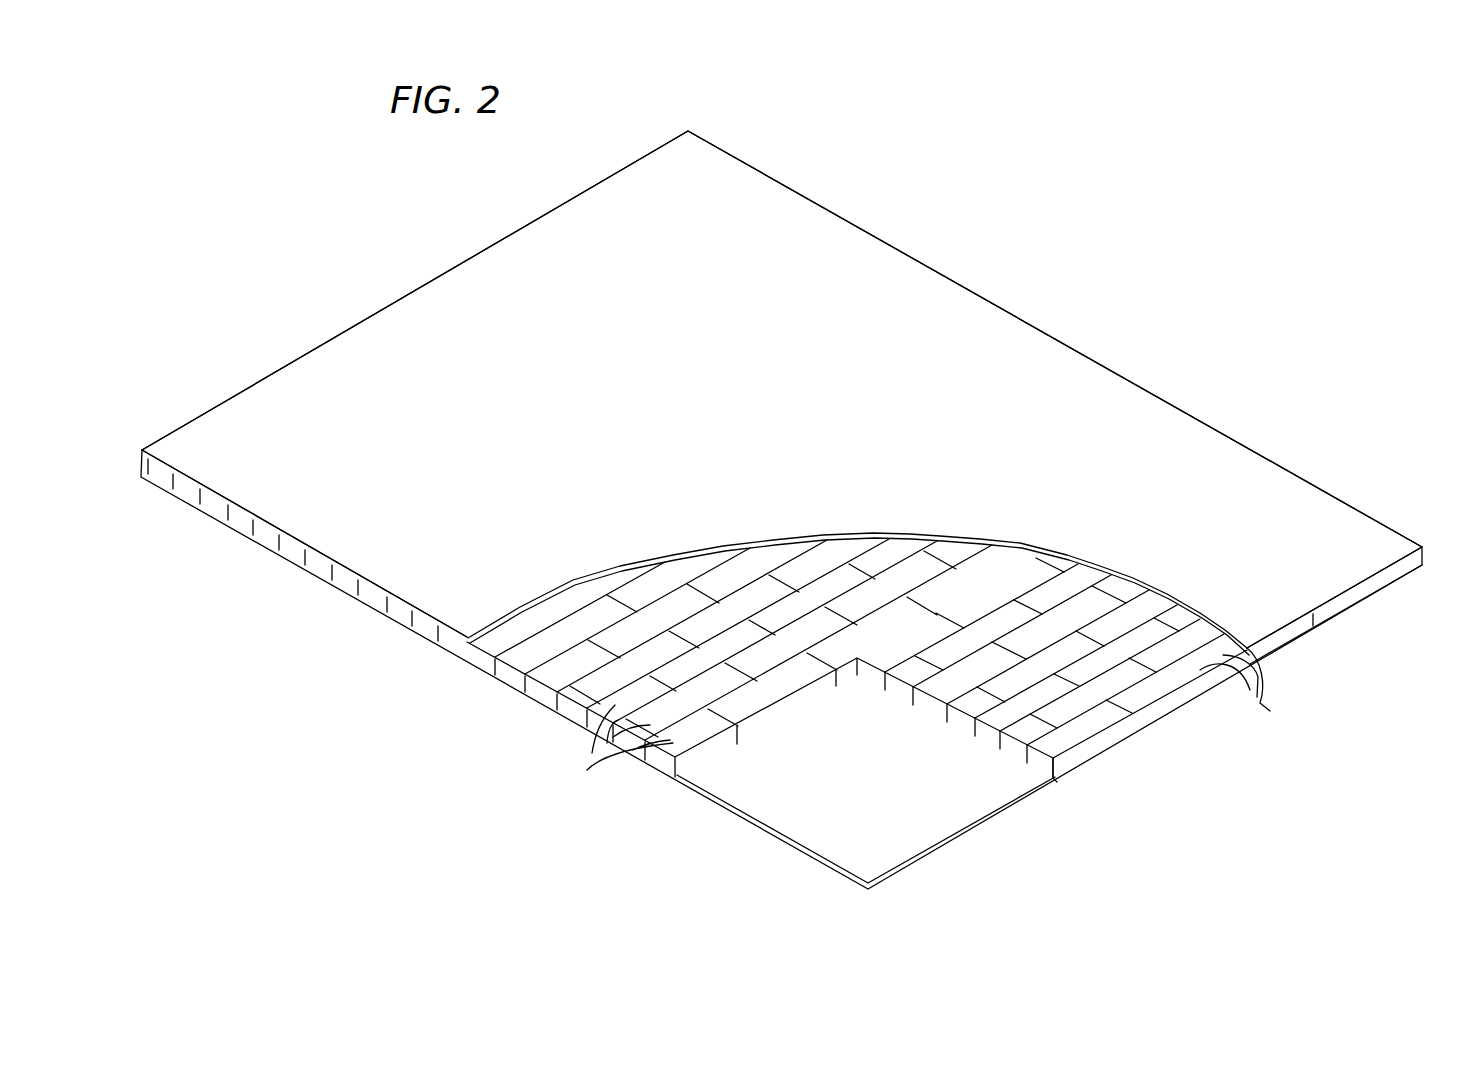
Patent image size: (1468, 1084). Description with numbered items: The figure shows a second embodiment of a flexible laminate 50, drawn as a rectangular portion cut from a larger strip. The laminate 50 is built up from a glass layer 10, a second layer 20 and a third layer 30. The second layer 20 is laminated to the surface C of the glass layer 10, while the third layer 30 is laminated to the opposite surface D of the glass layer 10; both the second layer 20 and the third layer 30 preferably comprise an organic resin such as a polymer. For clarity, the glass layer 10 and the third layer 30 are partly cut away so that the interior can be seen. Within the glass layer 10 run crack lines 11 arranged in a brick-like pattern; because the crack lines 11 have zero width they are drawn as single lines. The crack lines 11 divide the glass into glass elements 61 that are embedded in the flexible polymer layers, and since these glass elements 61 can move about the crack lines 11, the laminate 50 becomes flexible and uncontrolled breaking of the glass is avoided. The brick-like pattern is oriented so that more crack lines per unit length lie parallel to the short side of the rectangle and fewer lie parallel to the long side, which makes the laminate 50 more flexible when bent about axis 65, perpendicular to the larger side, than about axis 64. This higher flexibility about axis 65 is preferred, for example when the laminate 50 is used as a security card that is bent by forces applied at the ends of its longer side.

The glass layer 10 is at (1108, 713).
The crack lines 11 is at (1195, 674).
The second layer 20 is at (958, 813).
The third layer 30 is at (1315, 582).
The laminate 50 is at (380, 663).
The glass elements 61 is at (592, 762).
The axis 64 is at (294, 217).
The axis 65 is at (1092, 341).
The surface C is at (1055, 763).
The surface D is at (1055, 743).